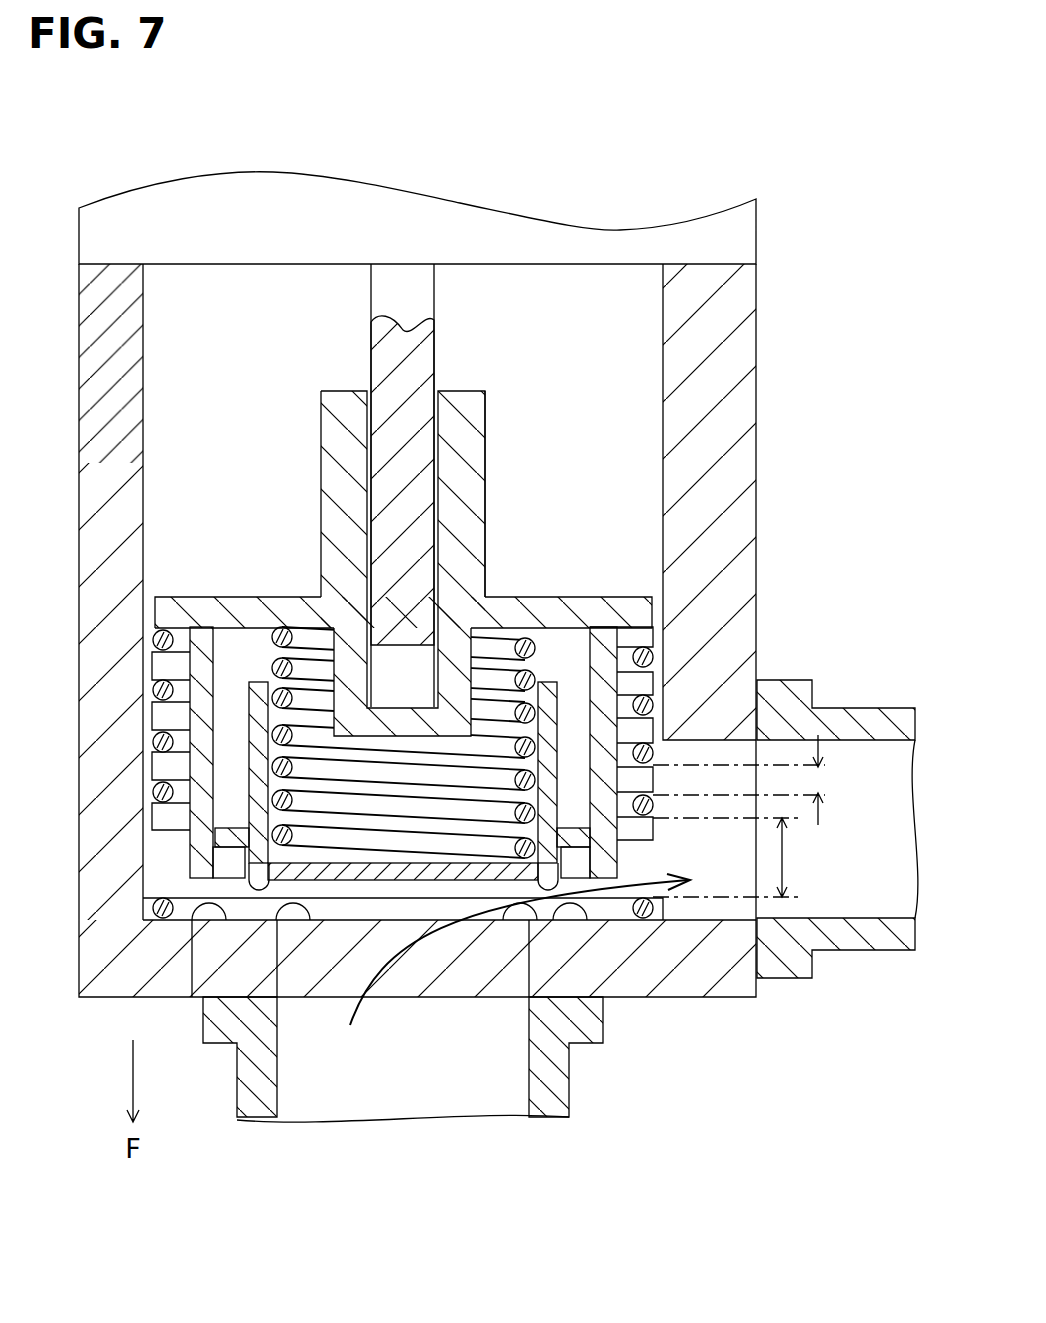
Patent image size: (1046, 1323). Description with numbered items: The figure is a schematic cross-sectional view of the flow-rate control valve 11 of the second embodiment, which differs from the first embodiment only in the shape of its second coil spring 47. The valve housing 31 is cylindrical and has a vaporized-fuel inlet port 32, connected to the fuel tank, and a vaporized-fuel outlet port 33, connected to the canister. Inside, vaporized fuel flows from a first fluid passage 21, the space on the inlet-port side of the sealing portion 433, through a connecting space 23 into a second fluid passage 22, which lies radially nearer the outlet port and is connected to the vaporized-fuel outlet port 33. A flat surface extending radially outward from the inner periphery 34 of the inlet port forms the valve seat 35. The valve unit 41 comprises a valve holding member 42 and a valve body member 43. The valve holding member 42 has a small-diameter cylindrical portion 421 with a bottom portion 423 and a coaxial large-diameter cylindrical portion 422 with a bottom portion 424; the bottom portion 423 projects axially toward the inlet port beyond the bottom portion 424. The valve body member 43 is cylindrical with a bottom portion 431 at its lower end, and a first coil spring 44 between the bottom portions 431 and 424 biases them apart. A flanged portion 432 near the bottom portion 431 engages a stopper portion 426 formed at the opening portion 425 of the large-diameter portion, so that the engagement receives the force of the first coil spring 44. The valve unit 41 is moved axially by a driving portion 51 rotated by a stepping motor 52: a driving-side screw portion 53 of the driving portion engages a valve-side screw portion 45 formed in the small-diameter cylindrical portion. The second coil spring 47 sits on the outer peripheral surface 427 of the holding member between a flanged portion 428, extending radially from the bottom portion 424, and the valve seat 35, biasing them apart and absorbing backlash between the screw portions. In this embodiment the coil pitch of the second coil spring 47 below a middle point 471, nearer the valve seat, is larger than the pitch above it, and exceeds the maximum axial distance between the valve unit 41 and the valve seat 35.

The flow-rate control valve 11 is at (410, 196).
The first fluid passage 21 is at (408, 905).
The second fluid passage 22 is at (730, 905).
The connecting space 23 is at (622, 892).
The valve housing 31 is at (437, 657).
The vaporized-fuel inlet port 32 is at (290, 1107).
The vaporized-fuel outlet port 33 is at (880, 893).
The inner periphery 34 is at (307, 921).
The valve seat 35 is at (192, 997).
The valve unit 41 is at (329, 533).
The valve holding member 42 is at (112, 752).
The valve body member 43 is at (298, 809).
The first coil spring 44 is at (215, 812).
The valve-side screw portion 45 is at (367, 462).
The second coil spring 47 is at (160, 753).
The driving portion 51 is at (382, 357).
The stepping motor 52 is at (118, 235).
The driving-side screw portion 53 is at (248, 544).
The small-diameter cylindrical portion 421 is at (342, 407).
The large-diameter cylindrical portion 422 is at (245, 607).
The bottom portion 423 is at (397, 720).
The bottom portion 424 is at (262, 597).
The opening portion 425 is at (238, 890).
The stopper portion 426 is at (233, 863).
The outer peripheral surface 427 is at (152, 689).
The flanged portion 428 is at (160, 613).
The bottom portion 431 is at (340, 873).
The flanged portion 432 is at (220, 839).
The sealing portion 433 is at (252, 1065).
The middle point 471 is at (660, 753).